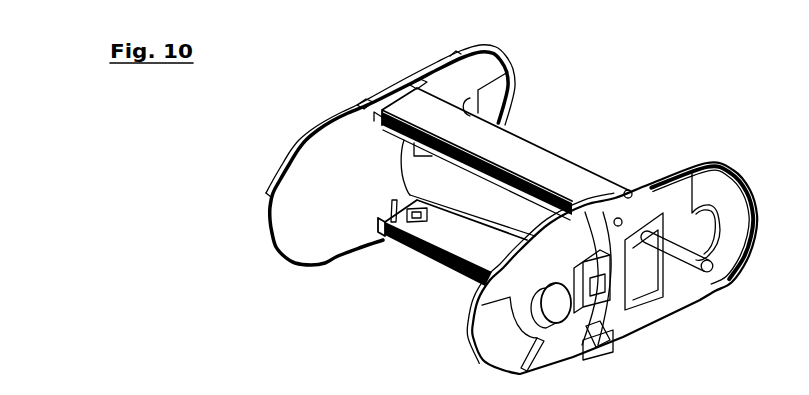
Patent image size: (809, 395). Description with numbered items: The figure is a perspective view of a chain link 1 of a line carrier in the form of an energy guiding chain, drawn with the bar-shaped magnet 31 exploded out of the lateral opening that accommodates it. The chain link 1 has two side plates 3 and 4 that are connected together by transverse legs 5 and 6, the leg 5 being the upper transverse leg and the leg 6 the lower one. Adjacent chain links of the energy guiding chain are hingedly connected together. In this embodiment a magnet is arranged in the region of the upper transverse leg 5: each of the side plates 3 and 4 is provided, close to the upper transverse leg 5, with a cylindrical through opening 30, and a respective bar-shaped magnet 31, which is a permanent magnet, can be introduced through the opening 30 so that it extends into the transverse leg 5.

The chain link 1 is at (609, 74).
The side plate 3 is at (305, 140).
The side plate 4 is at (738, 263).
The upper transverse leg 5 is at (520, 157).
The transverse leg 6 is at (433, 262).
The cylindrical through opening 30 is at (630, 190).
The bar-shaped magnet 31 is at (673, 245).